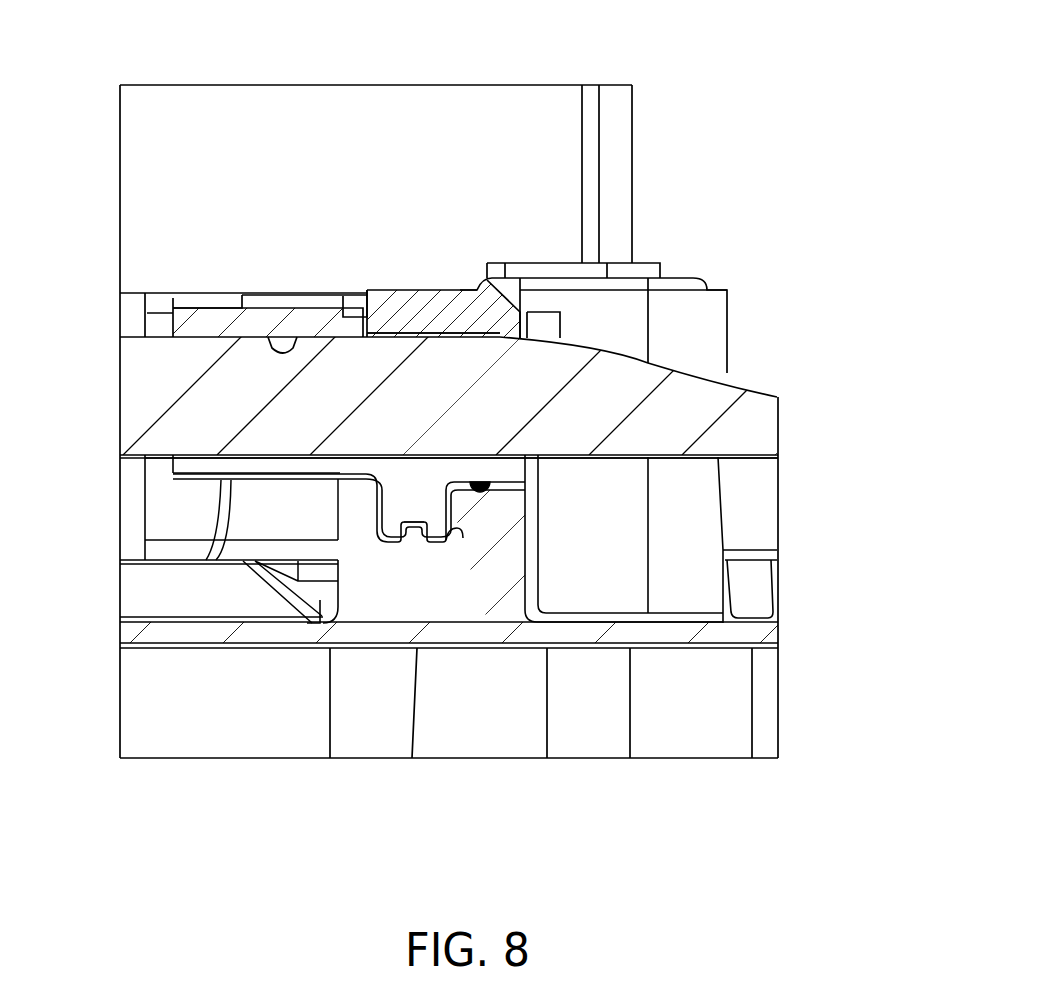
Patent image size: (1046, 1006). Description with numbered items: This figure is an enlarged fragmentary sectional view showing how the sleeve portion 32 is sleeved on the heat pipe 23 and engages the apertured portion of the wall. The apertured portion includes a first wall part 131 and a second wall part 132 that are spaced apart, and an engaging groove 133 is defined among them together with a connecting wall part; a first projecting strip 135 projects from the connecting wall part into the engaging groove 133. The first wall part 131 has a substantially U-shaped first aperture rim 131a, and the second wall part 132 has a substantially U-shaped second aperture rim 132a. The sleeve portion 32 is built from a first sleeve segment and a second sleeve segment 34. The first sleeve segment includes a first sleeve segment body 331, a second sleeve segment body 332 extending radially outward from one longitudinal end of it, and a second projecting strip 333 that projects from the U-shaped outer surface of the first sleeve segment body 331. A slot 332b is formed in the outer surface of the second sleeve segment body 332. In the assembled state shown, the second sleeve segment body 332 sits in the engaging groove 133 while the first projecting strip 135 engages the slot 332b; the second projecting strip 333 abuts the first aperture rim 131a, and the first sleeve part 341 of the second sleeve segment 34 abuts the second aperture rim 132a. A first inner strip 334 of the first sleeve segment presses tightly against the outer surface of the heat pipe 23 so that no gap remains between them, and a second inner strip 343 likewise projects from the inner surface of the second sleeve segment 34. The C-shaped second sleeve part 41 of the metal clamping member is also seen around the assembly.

The sleeve portion 32 is at (422, 275).
The heat pipe 23 is at (138, 395).
The second sleeve part 41 is at (157, 313).
The second inner strip 343 is at (284, 354).
The first inner strip 334 is at (462, 338).
The first sleeve part 341 is at (185, 465).
The second sleeve segment 34 is at (181, 476).
The second wall part 132 is at (352, 487).
The second aperture rim 132a is at (363, 474).
The first aperture rim 131a is at (486, 481).
The second sleeve segment body 332 is at (400, 497).
The slot 332b is at (378, 540).
The first sleeve segment body 331 is at (510, 474).
The second projecting strip 333 is at (486, 489).
The first wall part 131 is at (512, 548).
The first projecting strip 135 is at (410, 533).
The engaging groove 133 is at (460, 538).